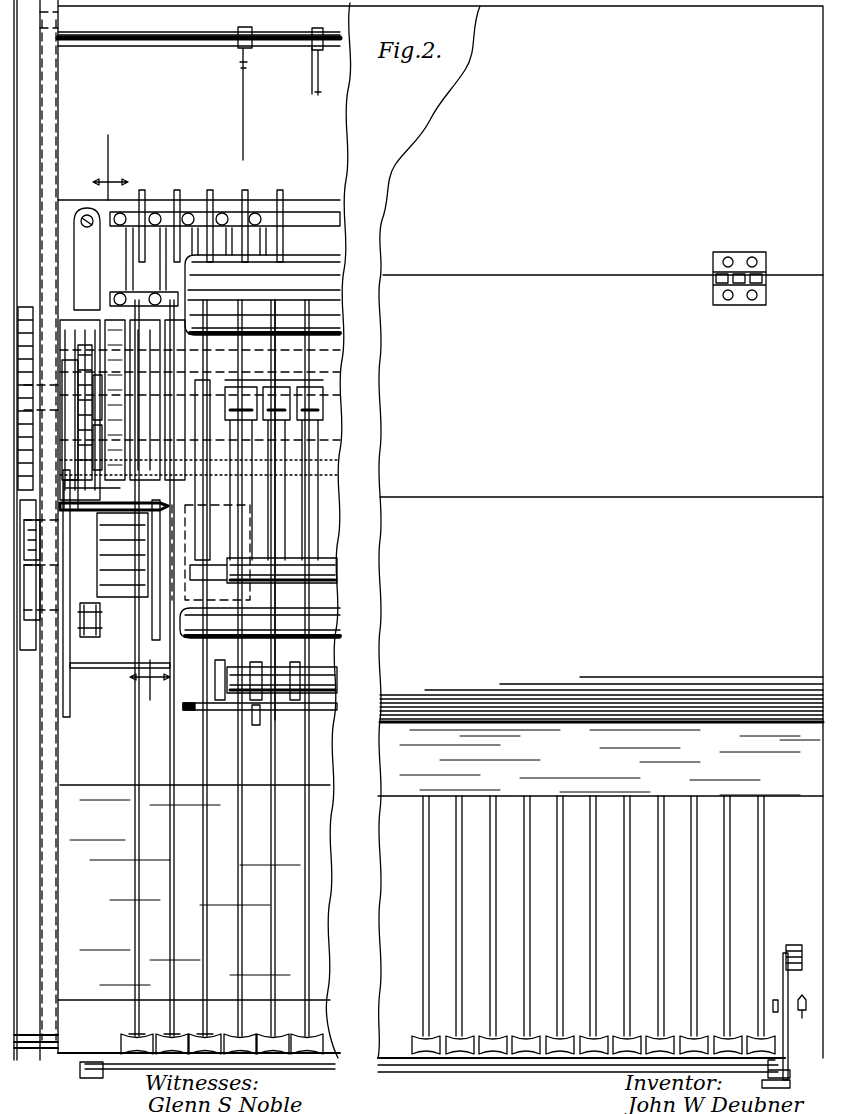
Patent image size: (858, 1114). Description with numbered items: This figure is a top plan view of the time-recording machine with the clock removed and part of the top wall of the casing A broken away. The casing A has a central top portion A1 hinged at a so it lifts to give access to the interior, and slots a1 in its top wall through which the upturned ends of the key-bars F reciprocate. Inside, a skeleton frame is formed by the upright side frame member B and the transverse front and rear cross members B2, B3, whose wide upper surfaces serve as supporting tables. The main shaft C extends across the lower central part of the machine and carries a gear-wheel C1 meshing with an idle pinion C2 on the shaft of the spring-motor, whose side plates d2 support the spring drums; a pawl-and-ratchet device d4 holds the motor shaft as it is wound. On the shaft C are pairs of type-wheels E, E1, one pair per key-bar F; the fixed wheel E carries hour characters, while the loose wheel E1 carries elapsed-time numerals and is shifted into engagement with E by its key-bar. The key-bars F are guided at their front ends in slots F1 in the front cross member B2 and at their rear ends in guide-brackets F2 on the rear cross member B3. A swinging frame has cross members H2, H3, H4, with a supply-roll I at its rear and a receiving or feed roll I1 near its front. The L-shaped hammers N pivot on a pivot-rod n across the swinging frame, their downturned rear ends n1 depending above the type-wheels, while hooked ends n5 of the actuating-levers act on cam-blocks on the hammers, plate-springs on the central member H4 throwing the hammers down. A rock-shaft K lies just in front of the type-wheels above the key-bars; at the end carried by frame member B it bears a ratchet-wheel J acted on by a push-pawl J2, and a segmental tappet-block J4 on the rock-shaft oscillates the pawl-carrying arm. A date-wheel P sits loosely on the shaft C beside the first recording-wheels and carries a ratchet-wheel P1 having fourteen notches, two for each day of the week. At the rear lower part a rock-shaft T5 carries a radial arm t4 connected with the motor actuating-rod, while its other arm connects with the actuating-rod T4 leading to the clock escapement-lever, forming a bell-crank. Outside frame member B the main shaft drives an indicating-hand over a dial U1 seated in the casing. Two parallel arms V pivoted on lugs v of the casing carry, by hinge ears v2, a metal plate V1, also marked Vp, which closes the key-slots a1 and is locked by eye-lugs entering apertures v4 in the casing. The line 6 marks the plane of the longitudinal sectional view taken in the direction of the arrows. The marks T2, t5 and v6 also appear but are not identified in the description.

The outer sheet-metal casing A is at (603, 239).
The central top portion of casing A1 is at (601, 439).
The hinge a is at (713, 282).
The slots in top wall of casing a1 is at (703, 920).
The side frame member B is at (48, 850).
The front cross-frame member B2 is at (62, 968).
The rear cross-frame member B3 is at (75, 212).
The main shaft C is at (62, 386).
The gear-wheel C1 is at (80, 355).
The idle pinion C2 is at (70, 470).
The motor side frame plates d2 is at (258, 730).
The pawl-and-ratchet mechanism d4 is at (66, 488).
The type-wheel E is at (190, 326).
The movable type-wheel E1 is at (176, 330).
The key-bars F is at (203, 742).
The guide slots F1 is at (205, 868).
The guide-brackets F2 is at (255, 225).
The cross frame member of swinging frame H2 is at (280, 720).
The cross frame member of swinging frame H3 is at (188, 478).
The central cross frame member H4 is at (193, 560).
The supply-roll I is at (330, 284).
The receiving or feed roll I1 is at (330, 626).
The ratchet-wheel J is at (26, 640).
The push-pawl J2 is at (62, 585).
The tappet-block J4 is at (50, 528).
The rock-shaft K is at (160, 570).
The impressing-hammers N is at (340, 655).
The pivot-rod n is at (350, 700).
The downturned end portion of hammer n1 is at (105, 548).
The hooked end portion of actuating-lever n5 is at (300, 670).
The date-wheel P is at (90, 392).
The ratchet-wheel P1 is at (100, 404).
The bar T2 is at (72, 645).
The actuating-rod T4 is at (290, 87).
The rock-shaft T5 is at (155, 48).
The arm of rock-shaft t4 is at (238, 64).
The hanger t5 is at (304, 61).
The dial U1 is at (27, 312).
The parallel arms V is at (783, 985).
The metal plate V1 is at (772, 1062).
The metal plate Vp is at (490, 1073).
The pivot-lugs v is at (788, 947).
The hinge lugs or ears v2 is at (792, 1086).
The apertures in casing v4 is at (778, 1017).
The pin v6 is at (805, 1015).
The section line 6 is at (131, 409).